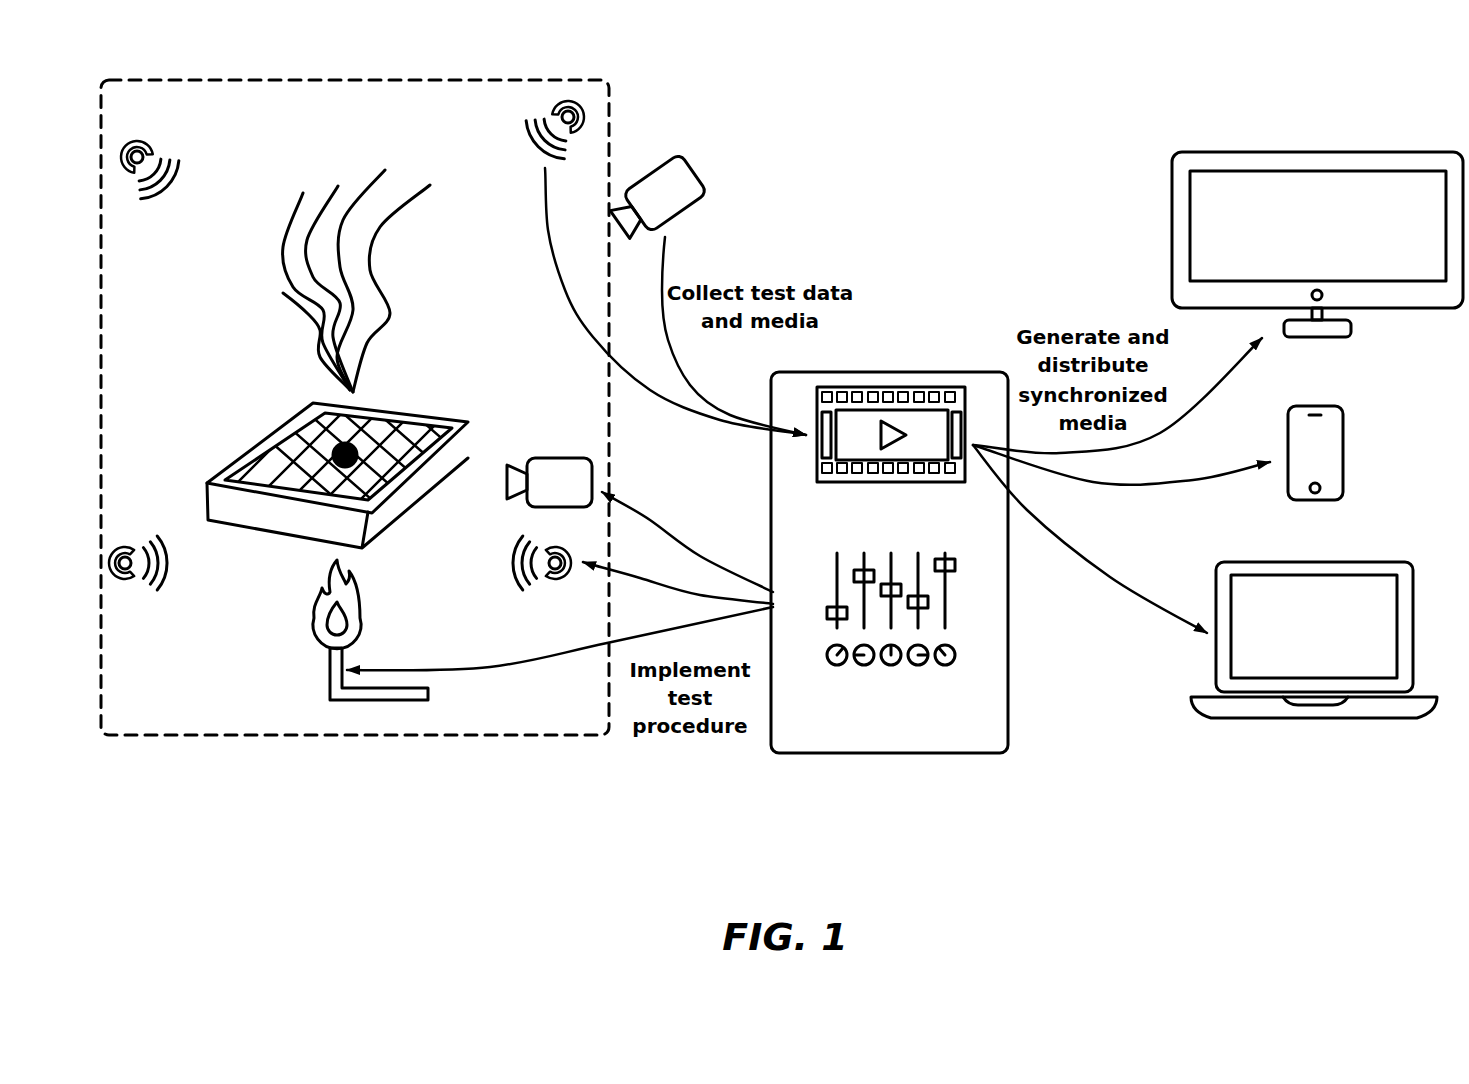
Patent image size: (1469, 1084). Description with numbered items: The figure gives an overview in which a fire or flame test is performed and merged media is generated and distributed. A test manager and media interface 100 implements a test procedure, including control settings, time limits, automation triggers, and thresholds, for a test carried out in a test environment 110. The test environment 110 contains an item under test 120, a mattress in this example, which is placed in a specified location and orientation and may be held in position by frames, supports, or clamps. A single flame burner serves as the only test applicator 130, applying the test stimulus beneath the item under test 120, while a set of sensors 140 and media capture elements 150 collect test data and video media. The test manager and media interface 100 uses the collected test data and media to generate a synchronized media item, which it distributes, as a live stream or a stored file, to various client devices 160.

The test manager and media interface 100 is at (822, 753).
The test environment 110 is at (190, 737).
The item under test 120 is at (215, 487).
The test applicator 130 is at (330, 688).
The sensors 140 is at (122, 585).
The media capture elements 150 is at (702, 212).
The client devices 160 is at (1272, 150).